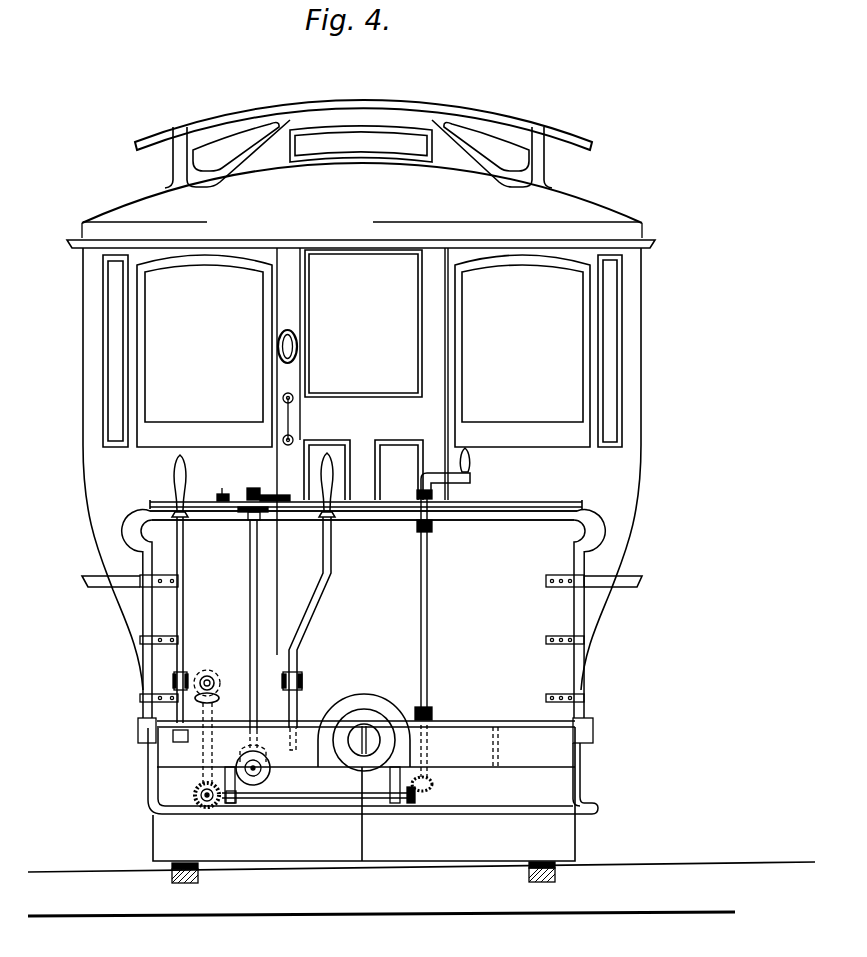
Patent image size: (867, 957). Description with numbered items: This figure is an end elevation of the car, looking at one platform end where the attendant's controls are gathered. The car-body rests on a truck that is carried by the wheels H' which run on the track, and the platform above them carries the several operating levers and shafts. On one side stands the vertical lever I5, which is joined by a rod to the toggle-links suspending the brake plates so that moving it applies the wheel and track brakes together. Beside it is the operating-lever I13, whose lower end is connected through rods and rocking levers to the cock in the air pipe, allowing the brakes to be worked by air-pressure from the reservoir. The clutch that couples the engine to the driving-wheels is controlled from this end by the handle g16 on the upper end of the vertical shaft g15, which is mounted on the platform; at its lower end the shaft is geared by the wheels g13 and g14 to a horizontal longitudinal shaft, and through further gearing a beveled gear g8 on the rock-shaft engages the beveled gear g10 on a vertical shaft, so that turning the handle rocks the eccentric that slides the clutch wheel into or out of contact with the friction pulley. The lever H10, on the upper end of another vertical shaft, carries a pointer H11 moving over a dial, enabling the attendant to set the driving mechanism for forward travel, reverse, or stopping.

The vertical lever I5 is at (185, 581).
The operating-lever I13 is at (322, 597).
The handle g16 is at (471, 478).
The vertical shaft g15 is at (428, 635).
The lever H10 is at (268, 487).
The pointer H11 is at (221, 485).
The beveled gear g8 is at (212, 676).
The beveled gear g10 is at (217, 700).
The gear wheel g13 is at (207, 808).
The gear wheel g14 is at (224, 806).
The wheel H' is at (353, 882).